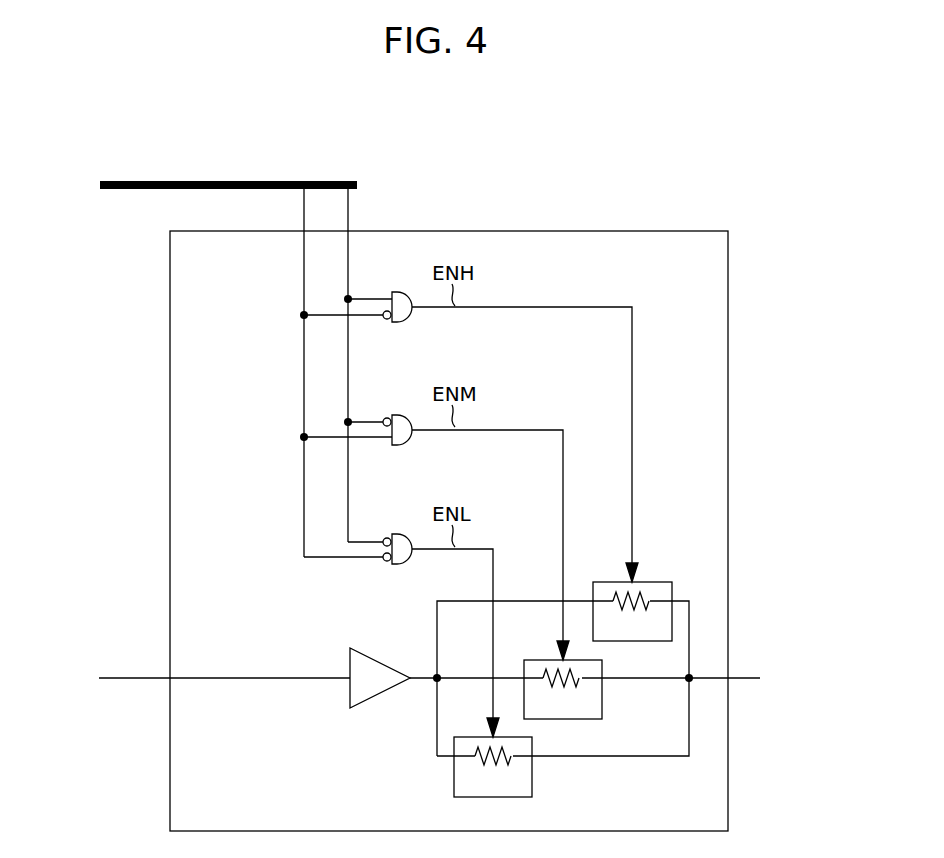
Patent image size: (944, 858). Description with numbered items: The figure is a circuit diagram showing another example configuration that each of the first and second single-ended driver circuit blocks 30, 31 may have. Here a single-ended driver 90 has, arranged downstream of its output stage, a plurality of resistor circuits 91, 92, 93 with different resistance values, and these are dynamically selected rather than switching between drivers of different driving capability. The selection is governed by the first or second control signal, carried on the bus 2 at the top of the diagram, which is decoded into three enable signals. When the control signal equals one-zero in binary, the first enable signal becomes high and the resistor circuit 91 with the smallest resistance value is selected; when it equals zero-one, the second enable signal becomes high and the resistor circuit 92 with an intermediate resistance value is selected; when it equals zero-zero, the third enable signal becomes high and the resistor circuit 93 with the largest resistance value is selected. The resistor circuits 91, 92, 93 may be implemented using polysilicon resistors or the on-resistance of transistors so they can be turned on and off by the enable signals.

The drive strength setting signal bus DrvStr* 2 is at (162, 172).
The first single-ended driver circuit block 30 is at (502, 531).
The second single-ended driver circuit block 31 is at (728, 285).
The single-ended driver 90 is at (378, 658).
The resistor circuit 91 is at (650, 582).
The resistor circuit 92 is at (602, 699).
The resistor circuit 93 is at (532, 774).